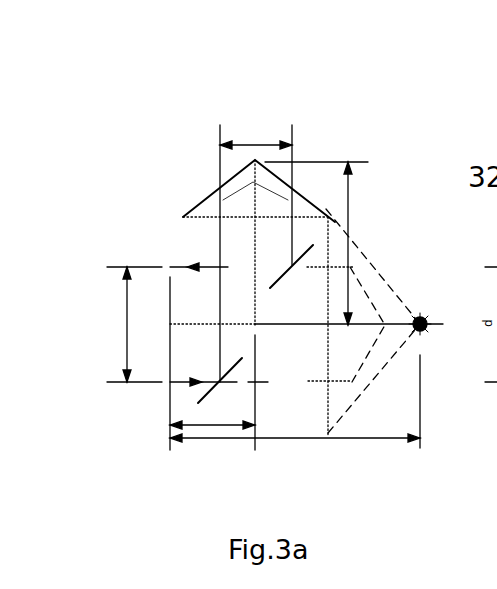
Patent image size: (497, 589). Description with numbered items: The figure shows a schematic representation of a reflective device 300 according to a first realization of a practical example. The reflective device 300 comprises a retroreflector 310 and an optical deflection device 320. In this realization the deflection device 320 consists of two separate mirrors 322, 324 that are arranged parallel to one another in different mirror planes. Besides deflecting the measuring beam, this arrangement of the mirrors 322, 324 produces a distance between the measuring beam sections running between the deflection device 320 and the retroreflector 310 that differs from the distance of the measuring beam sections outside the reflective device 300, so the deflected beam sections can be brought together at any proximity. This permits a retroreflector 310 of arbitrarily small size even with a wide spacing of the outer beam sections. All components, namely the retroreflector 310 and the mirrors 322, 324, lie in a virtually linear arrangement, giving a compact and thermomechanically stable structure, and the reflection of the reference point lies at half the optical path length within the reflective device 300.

The reflective device 300 is at (265, 100).
The retroreflector 310 is at (303, 200).
The optical deflection device 320 is at (125, 252).
The mirror 322 is at (277, 282).
The mirror 324 is at (205, 392).